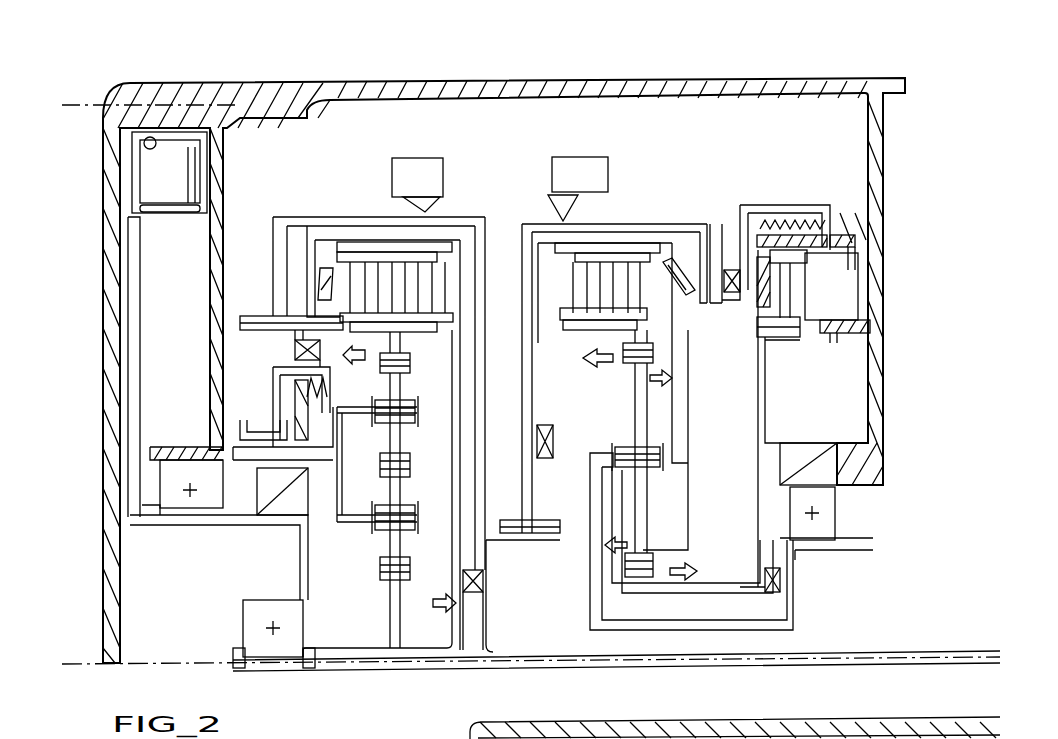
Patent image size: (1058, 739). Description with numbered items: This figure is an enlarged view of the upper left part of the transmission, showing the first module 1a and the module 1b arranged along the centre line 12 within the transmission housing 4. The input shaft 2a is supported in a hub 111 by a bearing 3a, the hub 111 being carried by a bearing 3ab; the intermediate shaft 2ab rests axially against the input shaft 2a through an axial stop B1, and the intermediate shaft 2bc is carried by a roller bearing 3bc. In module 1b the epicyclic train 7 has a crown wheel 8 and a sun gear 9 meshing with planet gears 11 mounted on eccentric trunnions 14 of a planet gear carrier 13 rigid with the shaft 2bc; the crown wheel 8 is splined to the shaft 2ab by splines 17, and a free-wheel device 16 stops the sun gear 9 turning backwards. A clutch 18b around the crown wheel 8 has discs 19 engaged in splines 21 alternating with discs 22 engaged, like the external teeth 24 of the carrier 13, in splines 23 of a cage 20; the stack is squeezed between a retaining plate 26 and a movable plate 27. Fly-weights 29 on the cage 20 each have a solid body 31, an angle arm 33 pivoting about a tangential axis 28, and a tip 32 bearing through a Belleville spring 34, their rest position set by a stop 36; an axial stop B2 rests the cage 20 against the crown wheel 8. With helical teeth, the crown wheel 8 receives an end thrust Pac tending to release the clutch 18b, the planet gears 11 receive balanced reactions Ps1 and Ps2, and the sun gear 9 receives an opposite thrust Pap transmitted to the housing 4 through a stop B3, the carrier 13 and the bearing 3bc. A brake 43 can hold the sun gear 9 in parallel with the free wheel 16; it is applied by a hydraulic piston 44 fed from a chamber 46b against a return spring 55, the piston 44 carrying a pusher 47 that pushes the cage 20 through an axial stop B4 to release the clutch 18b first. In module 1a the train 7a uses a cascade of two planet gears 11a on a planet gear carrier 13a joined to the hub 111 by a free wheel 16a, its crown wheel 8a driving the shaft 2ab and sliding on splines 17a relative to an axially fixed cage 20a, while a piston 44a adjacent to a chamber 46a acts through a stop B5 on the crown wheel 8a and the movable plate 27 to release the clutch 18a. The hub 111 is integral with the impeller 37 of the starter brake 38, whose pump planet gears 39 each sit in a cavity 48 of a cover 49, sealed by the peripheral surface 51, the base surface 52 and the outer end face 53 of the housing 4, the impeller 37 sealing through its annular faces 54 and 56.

The transmission housing 4 is at (722, 88).
The starter brake 38 is at (172, 76).
The cavity 48 is at (188, 124).
The cover 49 is at (107, 187).
The annular face 54 is at (103, 242).
The hydraulic chamber 46b is at (868, 278).
The base surface 52 is at (132, 170).
The outer end face 53 is at (205, 160).
The planet gear 39 is at (190, 183).
The peripheral surface 51 is at (142, 135).
The annular face 56 is at (206, 219).
The impeller 37 is at (147, 342).
The bearing 3ab is at (200, 498).
The hub 111 is at (182, 530).
The free wheel 16a is at (298, 500).
The planet carrier 7a is at (355, 548).
The bearing 3a is at (303, 632).
The centre line 12 is at (163, 655).
The first module 1a is at (330, 184).
The clutch 18a is at (333, 231).
The movable plate 27 is at (347, 283).
The cage 20a is at (452, 277).
The Belleville spring 34 is at (506, 268).
The crown wheel 8a is at (400, 345).
The planet gears 11a is at (400, 388).
The planet gear carrier 13a is at (338, 450).
The splines 17a is at (260, 313).
The stop B5 is at (295, 350).
The piston 44a is at (280, 388).
The hydraulic chamber 46a is at (287, 422).
The return spring 55 is at (327, 390).
The module 1b is at (670, 176).
The clutch 18b is at (545, 242).
The retaining plate 26 is at (530, 237).
The annular discs 22 is at (546, 254).
The annular discs 19 is at (577, 300).
The splines 21 is at (593, 340).
The splines 23 is at (612, 243).
The external teeth 24 is at (663, 240).
The geometrical axis 28 is at (712, 225).
The cage 20 is at (732, 243).
The axial stop B4 is at (738, 265).
The activator tip 32 is at (700, 297).
The angle arm 33 is at (706, 224).
The centrifugal fly-weights 29 is at (421, 150).
The solid body 31 is at (578, 189).
The stop 36 is at (548, 196).
The crown wheel 8 is at (645, 345).
The planet gears 11 is at (643, 498).
The eccentric trunnions 14 is at (630, 447).
The sun gear 9 is at (630, 578).
The planet gear carrier 13 is at (588, 600).
The epicyclic train 7 is at (684, 502).
The axial stop B2 is at (547, 460).
The splines 17 is at (520, 520).
The intermediate shaft 2ab is at (518, 547).
The axial stop B1 is at (471, 600).
The input shaft 2a is at (823, 648).
The end thrust Pac is at (600, 370).
The axial reaction Ps1 is at (663, 390).
The axial reaction Ps2 is at (617, 530).
The end thrust Pap is at (683, 557).
The pusher 47 is at (755, 205).
The brake 43 is at (790, 348).
The hydraulic piston 44 is at (833, 334).
The free-wheel device 16 is at (798, 458).
The roller bearing 3bc is at (820, 503).
The intermediate shaft 2bc is at (828, 550).
The stop B3 is at (795, 590).